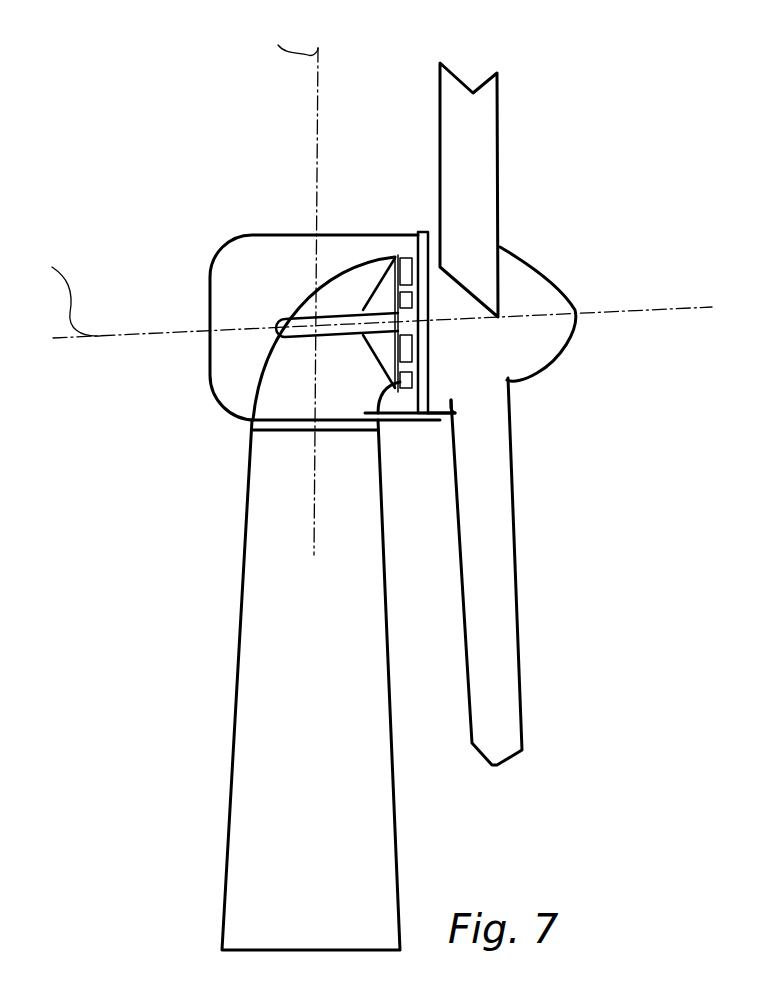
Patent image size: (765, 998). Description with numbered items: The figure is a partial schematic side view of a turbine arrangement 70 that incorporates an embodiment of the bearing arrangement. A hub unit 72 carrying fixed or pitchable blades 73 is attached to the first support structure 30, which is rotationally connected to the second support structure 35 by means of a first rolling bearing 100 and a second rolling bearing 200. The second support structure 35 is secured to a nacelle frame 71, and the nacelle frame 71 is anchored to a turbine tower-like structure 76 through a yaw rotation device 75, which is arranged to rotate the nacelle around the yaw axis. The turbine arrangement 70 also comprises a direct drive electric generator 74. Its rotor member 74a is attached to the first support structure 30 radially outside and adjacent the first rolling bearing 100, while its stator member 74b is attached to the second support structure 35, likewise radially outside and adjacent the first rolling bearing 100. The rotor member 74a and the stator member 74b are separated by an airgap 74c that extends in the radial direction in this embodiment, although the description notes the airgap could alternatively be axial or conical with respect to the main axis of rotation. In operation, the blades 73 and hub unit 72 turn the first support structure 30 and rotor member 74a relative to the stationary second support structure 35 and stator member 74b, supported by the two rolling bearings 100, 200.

The turbine arrangement 70 is at (146, 161).
The nacelle frame 71 is at (316, 290).
The hub unit 72 is at (522, 281).
The blades 73 is at (485, 178).
The direct drive electric generator 74 is at (409, 416).
The rotor member 74a is at (398, 242).
The stator member 74b is at (392, 248).
The airgap 74c is at (388, 393).
The yaw rotation device 75 is at (343, 430).
The turbine tower-like structure 76 is at (370, 840).
The first support structure 30 is at (420, 232).
The second support structure 35 is at (328, 301).
The first rolling bearing 100 is at (442, 384).
The second rolling bearing 200 is at (388, 334).